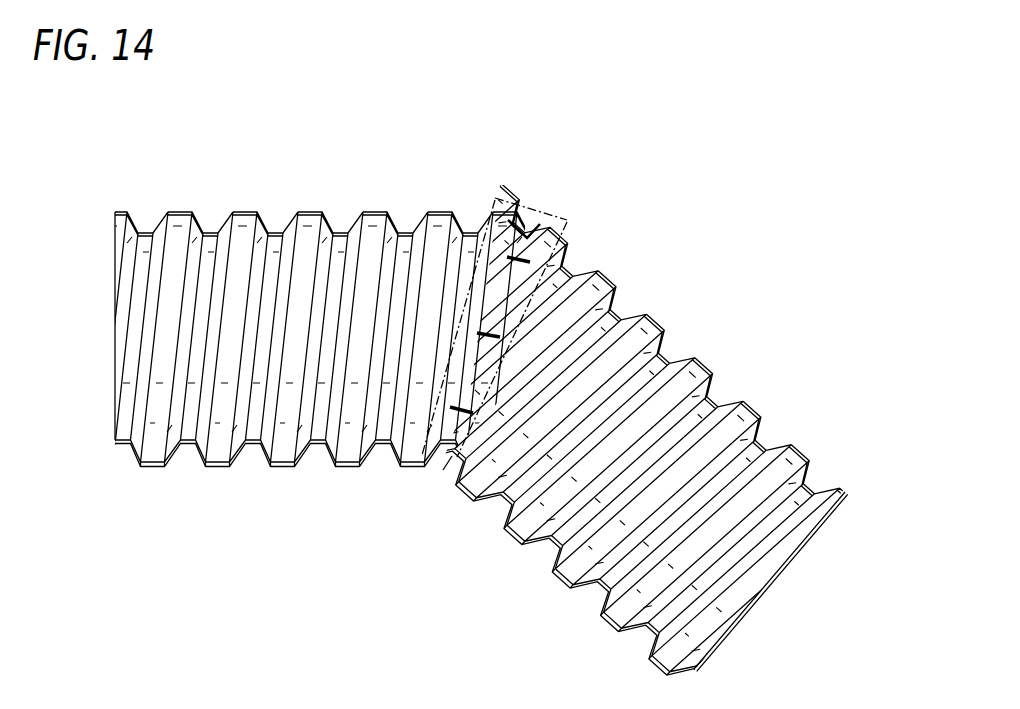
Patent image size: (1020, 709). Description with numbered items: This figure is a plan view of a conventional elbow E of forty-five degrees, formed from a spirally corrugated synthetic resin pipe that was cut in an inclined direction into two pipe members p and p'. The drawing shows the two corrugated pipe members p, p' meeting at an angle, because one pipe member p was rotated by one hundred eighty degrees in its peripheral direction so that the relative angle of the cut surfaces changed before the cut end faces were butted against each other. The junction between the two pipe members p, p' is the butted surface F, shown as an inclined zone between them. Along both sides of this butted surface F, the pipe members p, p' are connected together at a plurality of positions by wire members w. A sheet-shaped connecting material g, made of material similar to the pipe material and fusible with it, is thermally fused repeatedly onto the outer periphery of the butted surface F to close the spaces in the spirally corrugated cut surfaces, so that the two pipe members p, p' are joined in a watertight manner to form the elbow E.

The pipe member p' is at (545, 281).
The pipe member p is at (454, 354).
The elbow E is at (806, 412).
The butted surface F is at (506, 232).
The wire member w is at (542, 207).
The sheet-shaped connecting material g is at (443, 470).